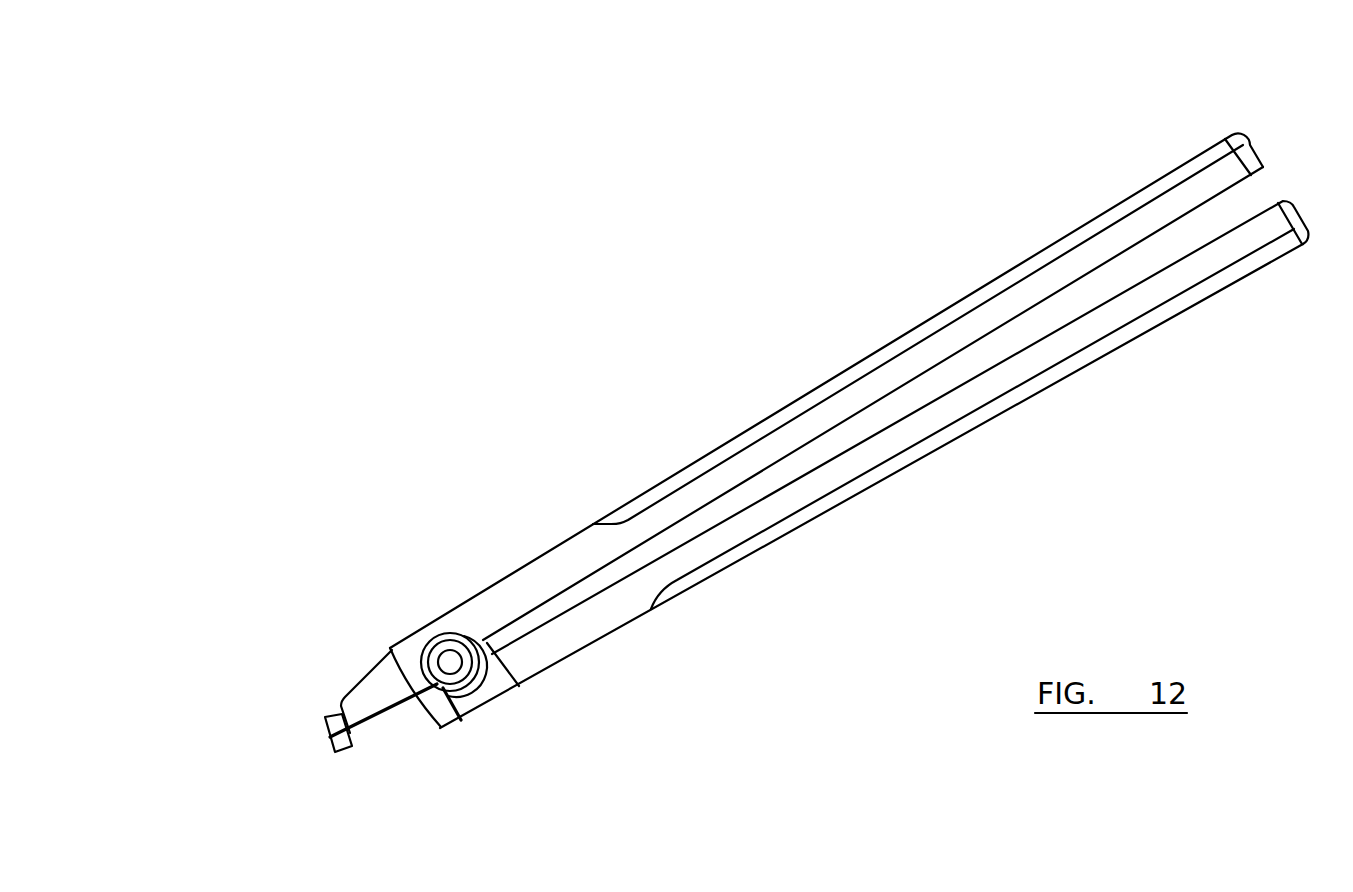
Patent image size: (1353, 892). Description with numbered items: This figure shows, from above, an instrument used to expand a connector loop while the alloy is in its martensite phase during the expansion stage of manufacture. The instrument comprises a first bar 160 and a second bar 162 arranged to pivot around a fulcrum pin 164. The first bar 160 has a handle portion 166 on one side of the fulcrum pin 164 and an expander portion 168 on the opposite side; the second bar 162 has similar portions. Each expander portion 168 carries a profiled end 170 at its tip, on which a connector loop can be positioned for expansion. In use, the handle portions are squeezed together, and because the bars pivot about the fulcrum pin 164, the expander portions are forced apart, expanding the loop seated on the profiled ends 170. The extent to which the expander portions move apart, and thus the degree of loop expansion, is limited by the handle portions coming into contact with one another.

The first bar 160 is at (1177, 200).
The second bar 162 is at (1230, 250).
The fulcrum pin 164 is at (450, 661).
The handle portion 166 is at (923, 358).
The expander portion 168 is at (378, 690).
The profiled end 170 is at (327, 727).